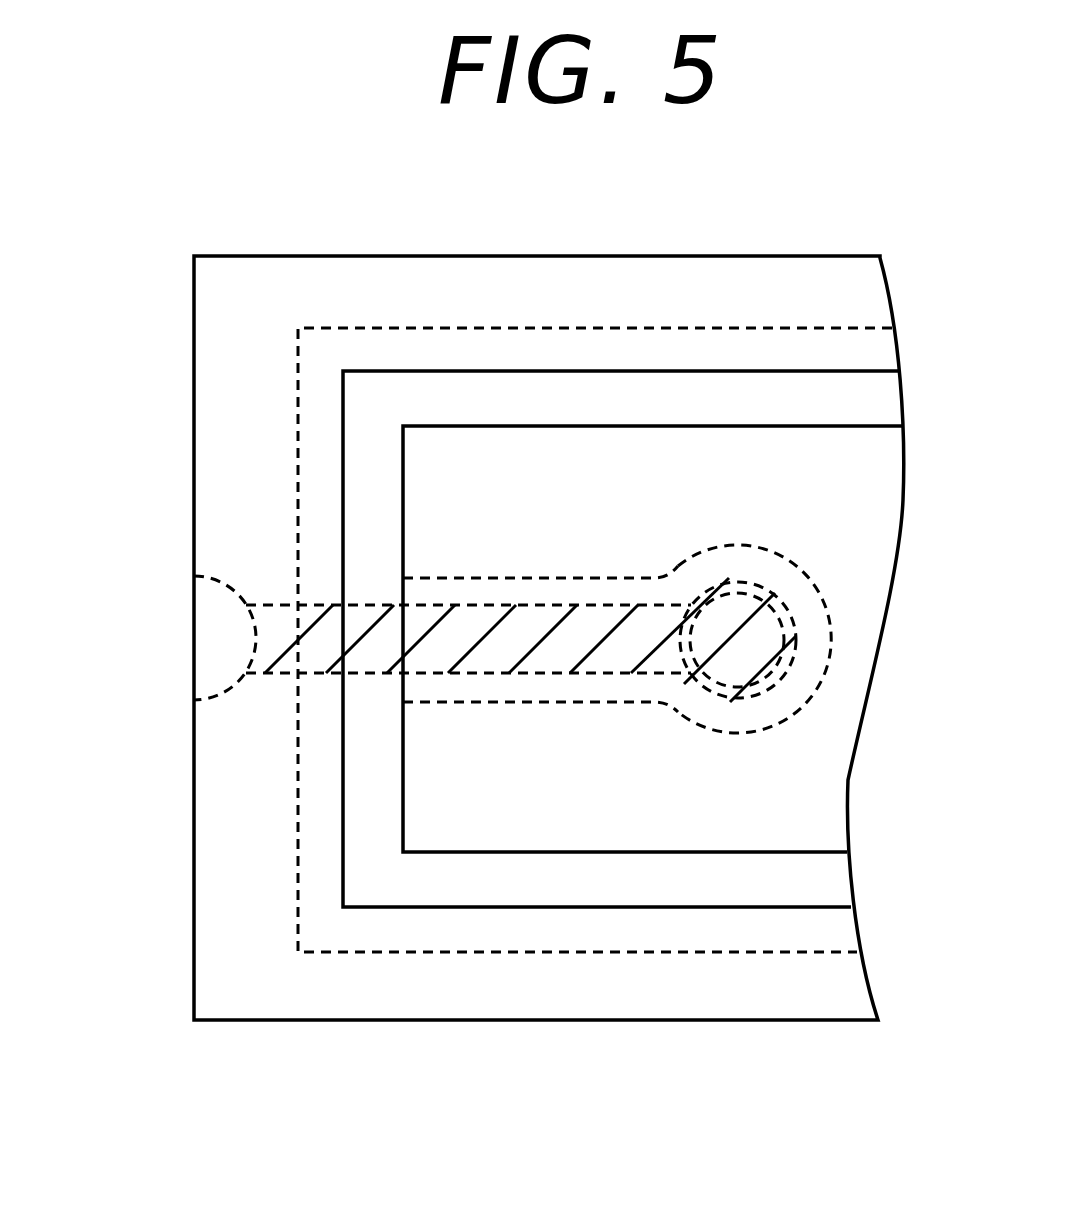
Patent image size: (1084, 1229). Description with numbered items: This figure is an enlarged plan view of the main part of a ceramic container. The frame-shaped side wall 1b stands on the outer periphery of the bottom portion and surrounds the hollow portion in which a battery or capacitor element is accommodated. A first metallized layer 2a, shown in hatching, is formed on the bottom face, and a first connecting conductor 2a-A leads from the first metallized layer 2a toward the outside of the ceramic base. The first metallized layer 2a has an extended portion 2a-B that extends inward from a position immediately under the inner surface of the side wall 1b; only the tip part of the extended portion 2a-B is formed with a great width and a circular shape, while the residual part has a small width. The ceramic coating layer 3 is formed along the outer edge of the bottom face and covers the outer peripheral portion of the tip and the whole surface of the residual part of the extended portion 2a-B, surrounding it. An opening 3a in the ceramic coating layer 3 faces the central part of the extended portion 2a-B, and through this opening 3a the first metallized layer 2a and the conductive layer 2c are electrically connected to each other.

The side wall 1b is at (240, 983).
The first metallized layer 2a is at (279, 607).
The first connecting conductor 2a-A is at (258, 624).
The extended portion 2a-B is at (510, 630).
The conductive layer 2c is at (815, 752).
The ceramic coating layer 3 is at (690, 400).
The opening 3a is at (737, 645).